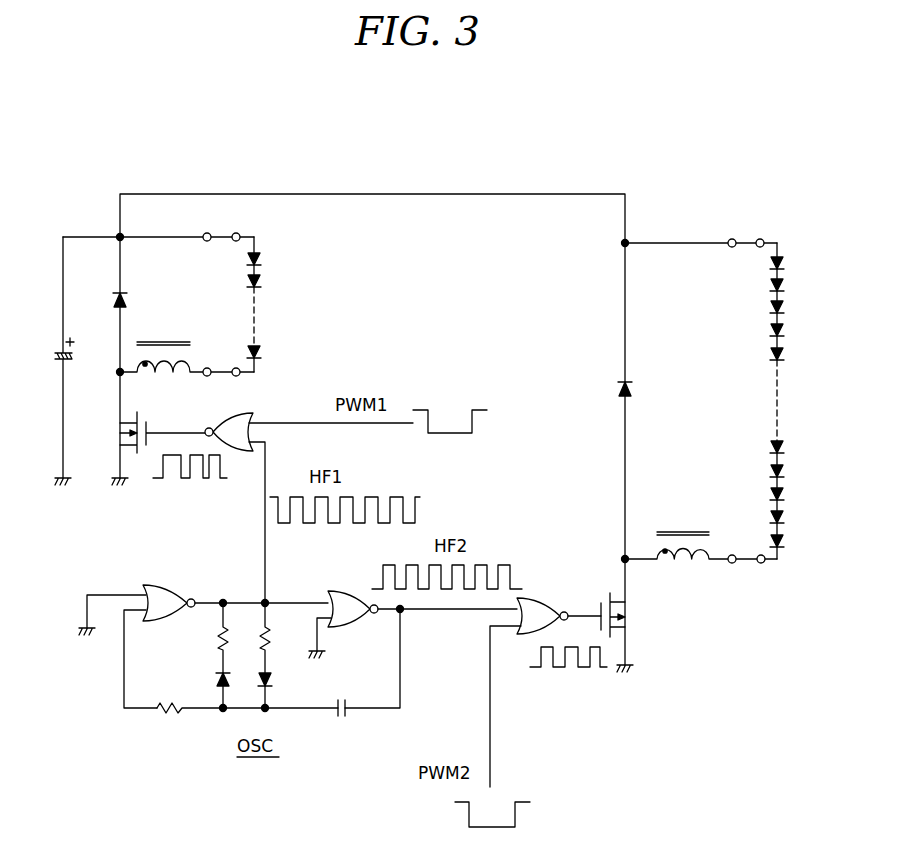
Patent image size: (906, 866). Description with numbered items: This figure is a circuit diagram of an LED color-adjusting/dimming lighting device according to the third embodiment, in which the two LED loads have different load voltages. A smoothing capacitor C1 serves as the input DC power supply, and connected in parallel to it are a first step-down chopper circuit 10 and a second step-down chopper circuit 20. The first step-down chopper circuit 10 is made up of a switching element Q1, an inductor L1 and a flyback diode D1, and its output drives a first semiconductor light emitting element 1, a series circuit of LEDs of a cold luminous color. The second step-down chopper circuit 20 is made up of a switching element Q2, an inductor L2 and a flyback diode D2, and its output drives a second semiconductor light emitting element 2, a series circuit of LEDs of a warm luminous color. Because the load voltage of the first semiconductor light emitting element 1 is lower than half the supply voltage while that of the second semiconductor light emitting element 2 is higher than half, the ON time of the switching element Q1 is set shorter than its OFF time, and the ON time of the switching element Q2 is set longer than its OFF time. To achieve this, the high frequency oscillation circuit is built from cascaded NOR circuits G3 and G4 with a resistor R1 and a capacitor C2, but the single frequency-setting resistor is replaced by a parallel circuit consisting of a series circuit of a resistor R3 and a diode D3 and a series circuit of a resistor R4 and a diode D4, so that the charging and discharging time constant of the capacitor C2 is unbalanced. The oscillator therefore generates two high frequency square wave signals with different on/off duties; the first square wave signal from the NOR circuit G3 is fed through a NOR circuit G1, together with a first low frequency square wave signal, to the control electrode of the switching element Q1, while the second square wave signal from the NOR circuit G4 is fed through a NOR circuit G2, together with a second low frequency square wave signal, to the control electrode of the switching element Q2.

The first semiconductor light emitting element 1 is at (258, 321).
The second semiconductor light emitting element 2 is at (775, 409).
The first step-down chopper circuit 10 is at (187, 359).
The second step-down chopper circuit 20 is at (701, 544).
The smoothing capacitor C1 is at (55, 357).
The capacitor C2 is at (343, 720).
The flyback diode D1 is at (107, 301).
The flyback diode D2 is at (613, 389).
The diode D3 is at (208, 689).
The diode D4 is at (284, 689).
The inductor L1 is at (177, 396).
The inductor L2 is at (696, 582).
The switching element Q1 is at (161, 445).
The switching element Q2 is at (634, 615).
The NOR circuit G1 is at (346, 496).
The NOR circuit G2 is at (531, 700).
The NOR circuit G3 is at (207, 632).
The NOR circuit G4 is at (419, 636).
The resistor R1 is at (247, 721).
The resistor R3 is at (209, 638).
The resistor R4 is at (281, 638).